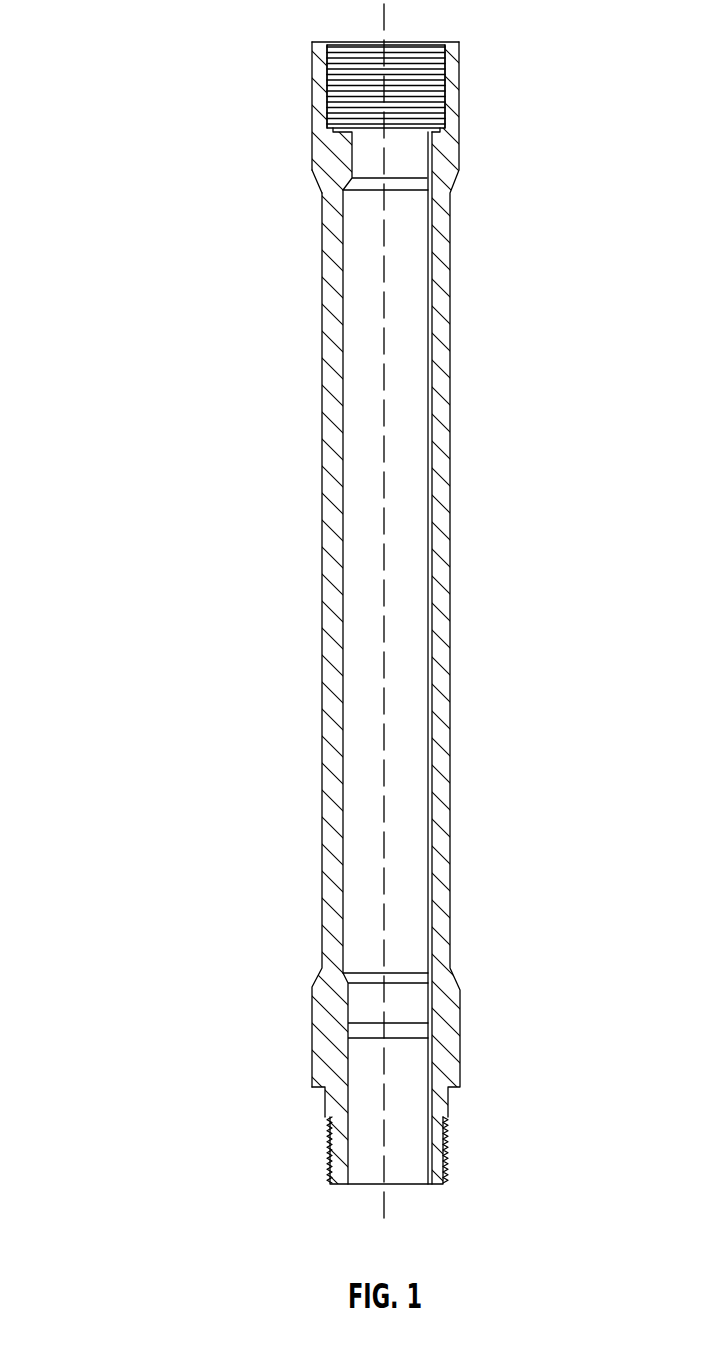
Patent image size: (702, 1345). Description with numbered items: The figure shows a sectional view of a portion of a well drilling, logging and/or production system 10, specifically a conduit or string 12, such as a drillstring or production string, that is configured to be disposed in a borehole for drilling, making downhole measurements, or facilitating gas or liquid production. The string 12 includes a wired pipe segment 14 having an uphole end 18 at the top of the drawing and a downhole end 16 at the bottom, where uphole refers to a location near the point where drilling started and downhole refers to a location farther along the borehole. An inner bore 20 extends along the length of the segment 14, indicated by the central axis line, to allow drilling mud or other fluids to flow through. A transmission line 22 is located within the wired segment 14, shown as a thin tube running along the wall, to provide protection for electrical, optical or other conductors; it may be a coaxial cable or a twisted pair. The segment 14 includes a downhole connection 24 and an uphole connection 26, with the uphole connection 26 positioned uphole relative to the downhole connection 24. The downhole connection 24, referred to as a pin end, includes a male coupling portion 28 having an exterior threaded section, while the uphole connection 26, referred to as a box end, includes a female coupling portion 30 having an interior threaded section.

The well drilling, logging and/or production system 10 is at (114, 50).
The conduit or string 12 is at (507, 662).
The wired pipe segment 14 is at (327, 867).
The downhole end 16 is at (372, 1186).
The uphole end 18 is at (362, 40).
The inner bore 20 is at (383, 588).
The transmission line 22 is at (432, 398).
The downhole connection 24 is at (327, 1093).
The uphole connection 26 is at (315, 68).
The male coupling portion 28 is at (443, 1120).
The female coupling portion 30 is at (447, 72).